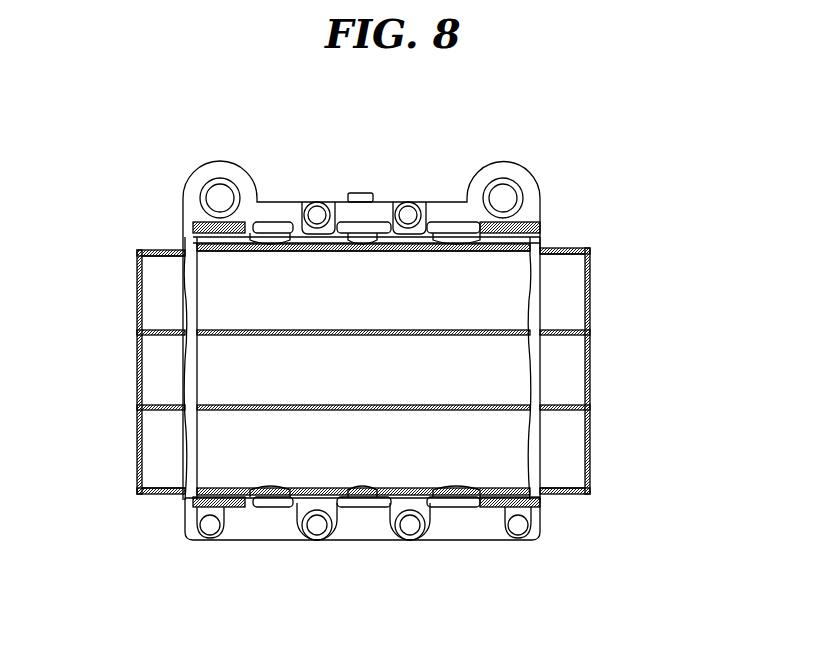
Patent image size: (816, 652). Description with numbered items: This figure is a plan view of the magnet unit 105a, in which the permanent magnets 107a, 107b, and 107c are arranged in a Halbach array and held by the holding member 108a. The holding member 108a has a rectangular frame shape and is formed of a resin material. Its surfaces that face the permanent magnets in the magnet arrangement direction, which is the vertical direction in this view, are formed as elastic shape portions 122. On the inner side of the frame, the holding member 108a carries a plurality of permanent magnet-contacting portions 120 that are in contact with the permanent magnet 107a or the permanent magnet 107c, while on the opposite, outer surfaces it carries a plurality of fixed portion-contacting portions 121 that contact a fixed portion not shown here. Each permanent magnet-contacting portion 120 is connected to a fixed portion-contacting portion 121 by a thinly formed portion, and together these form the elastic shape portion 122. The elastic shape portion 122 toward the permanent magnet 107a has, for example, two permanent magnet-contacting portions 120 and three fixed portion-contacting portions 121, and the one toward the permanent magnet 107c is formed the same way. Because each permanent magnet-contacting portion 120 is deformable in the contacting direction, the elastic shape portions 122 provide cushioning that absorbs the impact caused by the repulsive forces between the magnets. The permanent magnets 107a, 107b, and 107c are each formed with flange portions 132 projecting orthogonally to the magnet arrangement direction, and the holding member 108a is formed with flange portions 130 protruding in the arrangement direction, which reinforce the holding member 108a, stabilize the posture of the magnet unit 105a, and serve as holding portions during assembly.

The magnet unit 105a is at (618, 218).
The permanent magnet 107a is at (408, 455).
The permanent magnet 107b is at (487, 345).
The permanent magnet 107c is at (322, 275).
The holding member 108a is at (183, 495).
The permanent magnet-contacting portion 120 is at (270, 247).
The fixed portion-contacting portion 121 is at (228, 222).
The elastic shape portion 122 is at (330, 230).
The flange portion 130 is at (506, 170).
The flange portion 132 is at (155, 302).